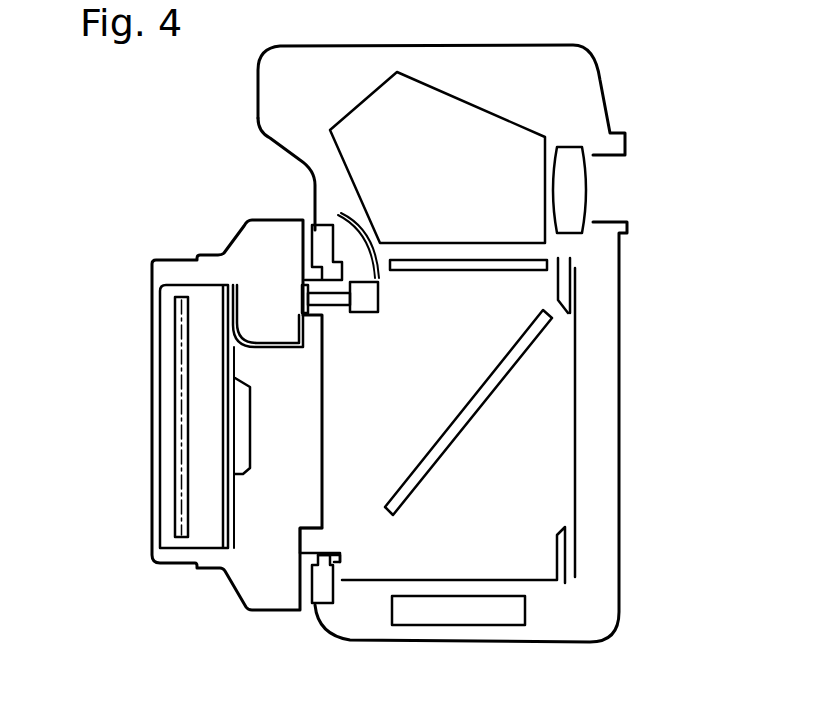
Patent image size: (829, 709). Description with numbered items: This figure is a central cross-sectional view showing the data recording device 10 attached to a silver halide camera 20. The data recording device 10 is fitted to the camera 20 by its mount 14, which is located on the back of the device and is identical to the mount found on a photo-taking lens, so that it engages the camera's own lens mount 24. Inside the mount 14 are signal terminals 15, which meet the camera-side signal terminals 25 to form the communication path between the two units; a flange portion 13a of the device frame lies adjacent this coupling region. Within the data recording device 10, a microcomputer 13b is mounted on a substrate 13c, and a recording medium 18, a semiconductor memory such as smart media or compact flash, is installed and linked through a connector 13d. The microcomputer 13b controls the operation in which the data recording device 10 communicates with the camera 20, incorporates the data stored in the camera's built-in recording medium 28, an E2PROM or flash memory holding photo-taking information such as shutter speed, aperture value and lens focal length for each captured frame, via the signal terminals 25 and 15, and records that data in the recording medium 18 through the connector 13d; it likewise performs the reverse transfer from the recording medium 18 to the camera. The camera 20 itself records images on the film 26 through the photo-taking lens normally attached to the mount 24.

The data recording device 10 is at (233, 225).
The flange portion of frame 13a is at (252, 346).
The microcomputer 13b is at (249, 432).
The substrate 13c is at (236, 530).
The connector 13d is at (192, 543).
The mount 14 is at (320, 553).
The signal terminals 15 is at (302, 291).
The recording medium 18 is at (173, 313).
The camera 20 is at (631, 271).
The mount 24 is at (333, 577).
The signal terminals 25 is at (365, 314).
The film 26 is at (577, 385).
The recording medium 28 is at (457, 622).